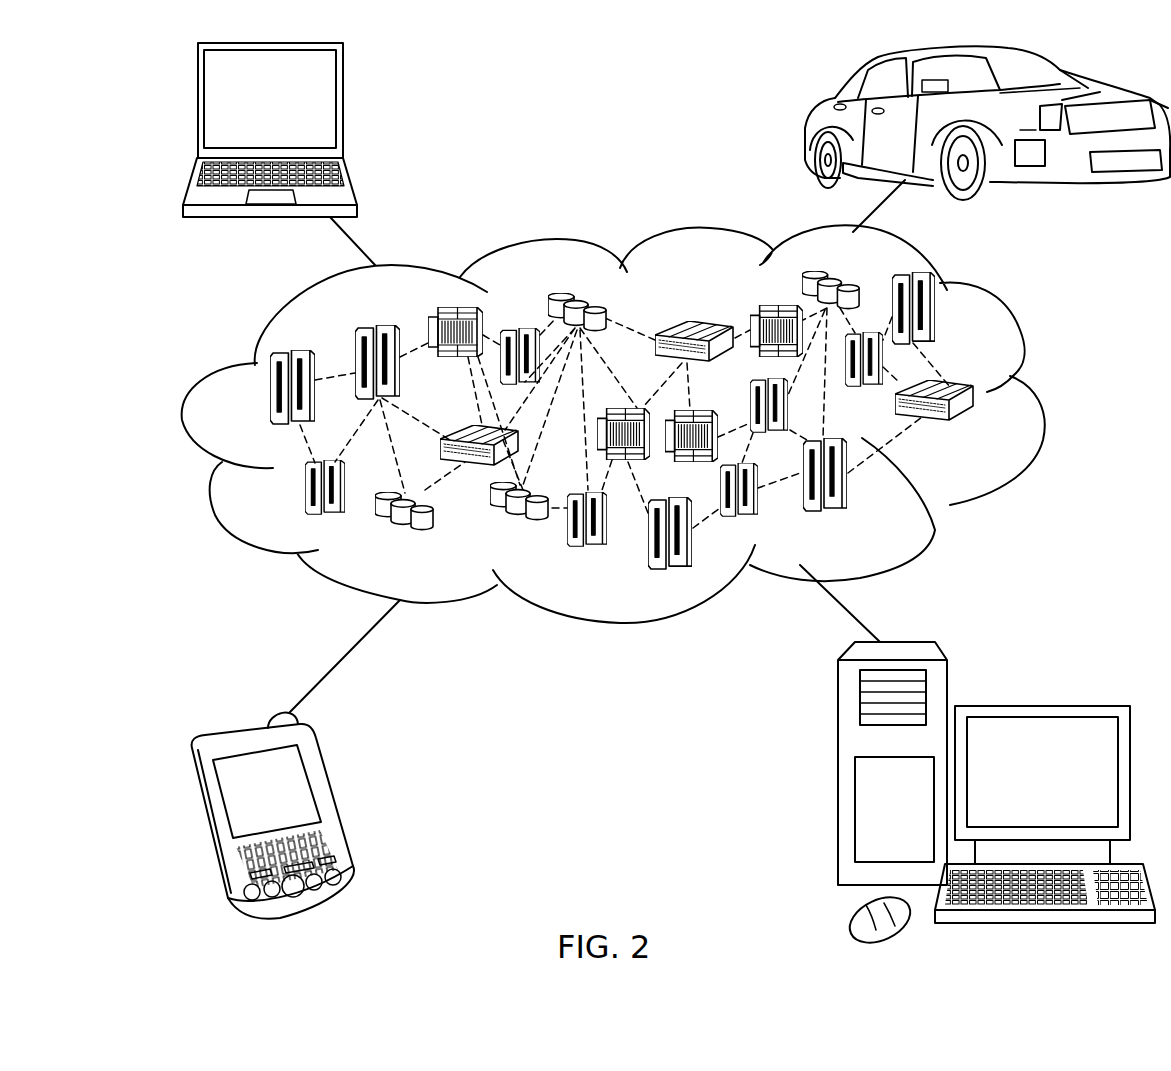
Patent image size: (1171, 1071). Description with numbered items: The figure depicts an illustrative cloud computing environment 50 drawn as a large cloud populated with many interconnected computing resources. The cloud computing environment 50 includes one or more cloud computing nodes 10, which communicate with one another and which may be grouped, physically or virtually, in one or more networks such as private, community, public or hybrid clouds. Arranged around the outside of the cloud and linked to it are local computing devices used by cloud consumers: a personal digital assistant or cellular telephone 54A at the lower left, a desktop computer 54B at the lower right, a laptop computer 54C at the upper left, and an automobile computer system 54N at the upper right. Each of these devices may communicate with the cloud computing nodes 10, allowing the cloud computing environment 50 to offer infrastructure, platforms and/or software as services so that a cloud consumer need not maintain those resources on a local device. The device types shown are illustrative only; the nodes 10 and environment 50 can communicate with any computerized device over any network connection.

The cloud computing environment 50 is at (1040, 397).
The cloud computing node 10 is at (988, 432).
The personal digital assistant or cellular telephone 54A is at (333, 806).
The desktop computer 54B is at (1040, 705).
The laptop computer 54C is at (343, 108).
The automobile computer system 54N is at (810, 123).